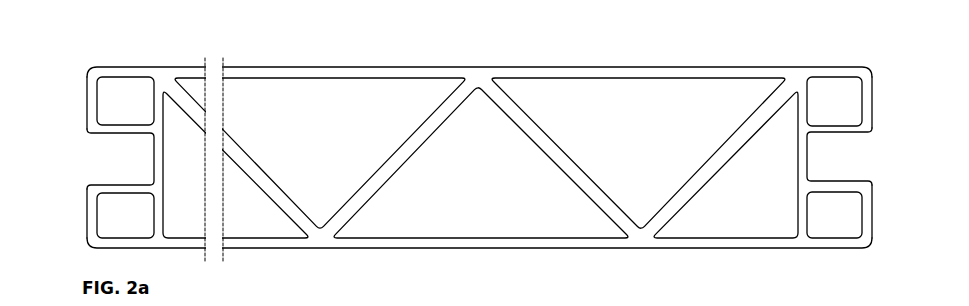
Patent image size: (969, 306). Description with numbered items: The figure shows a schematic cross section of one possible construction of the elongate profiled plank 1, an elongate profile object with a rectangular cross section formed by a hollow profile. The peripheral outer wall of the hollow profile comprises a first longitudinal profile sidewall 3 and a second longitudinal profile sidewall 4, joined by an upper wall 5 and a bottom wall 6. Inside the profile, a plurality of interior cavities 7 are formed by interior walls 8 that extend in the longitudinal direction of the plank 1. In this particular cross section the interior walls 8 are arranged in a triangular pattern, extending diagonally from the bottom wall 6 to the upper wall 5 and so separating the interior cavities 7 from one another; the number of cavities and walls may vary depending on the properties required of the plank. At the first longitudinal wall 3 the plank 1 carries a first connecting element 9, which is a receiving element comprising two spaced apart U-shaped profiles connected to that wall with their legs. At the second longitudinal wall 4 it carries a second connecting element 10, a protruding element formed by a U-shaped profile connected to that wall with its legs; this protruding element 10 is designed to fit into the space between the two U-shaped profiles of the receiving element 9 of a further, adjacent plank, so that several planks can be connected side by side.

The elongate profiled plank 1 is at (872, 301).
The first longitudinal profile sidewall 3 is at (812, 153).
The second longitudinal profile sidewall 4 is at (152, 155).
The upper wall 5 is at (473, 67).
The bottom wall 6 is at (485, 249).
The interior cavity 7 is at (472, 192).
The interior wall 8 is at (563, 160).
The first connecting element 9 is at (87, 97).
The second connecting element 10 is at (873, 97).